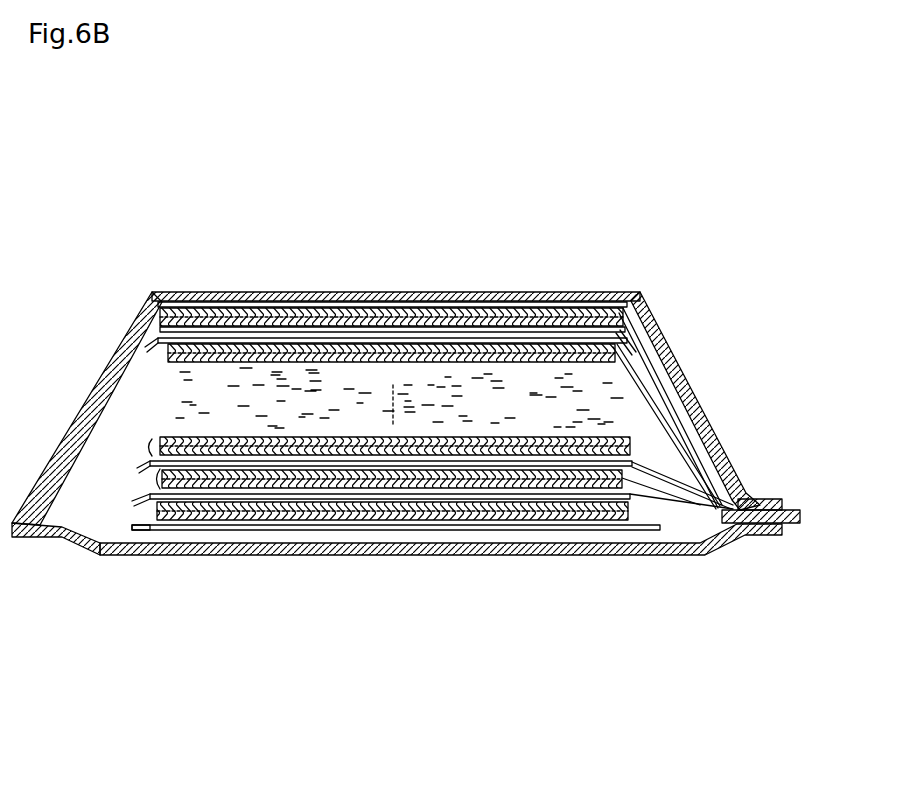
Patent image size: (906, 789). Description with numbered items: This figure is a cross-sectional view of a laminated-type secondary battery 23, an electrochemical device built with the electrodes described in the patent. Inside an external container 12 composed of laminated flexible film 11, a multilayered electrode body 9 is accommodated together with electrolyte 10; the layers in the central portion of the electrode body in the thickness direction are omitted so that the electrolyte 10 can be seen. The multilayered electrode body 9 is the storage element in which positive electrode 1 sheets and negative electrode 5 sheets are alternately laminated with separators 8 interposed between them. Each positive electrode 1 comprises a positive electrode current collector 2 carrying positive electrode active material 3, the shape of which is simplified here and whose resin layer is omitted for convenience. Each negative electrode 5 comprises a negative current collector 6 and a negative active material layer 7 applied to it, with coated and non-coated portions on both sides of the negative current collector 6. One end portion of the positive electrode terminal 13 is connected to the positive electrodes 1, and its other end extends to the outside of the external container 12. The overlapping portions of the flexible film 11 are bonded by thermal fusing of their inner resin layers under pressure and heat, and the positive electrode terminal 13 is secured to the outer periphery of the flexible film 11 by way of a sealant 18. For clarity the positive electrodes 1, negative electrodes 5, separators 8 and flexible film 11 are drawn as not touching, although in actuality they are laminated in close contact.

The positive electrode 1 is at (147, 480).
The positive electrode current collector 2 is at (712, 473).
The positive electrode active material 3 is at (538, 360).
The negative electrode 5 is at (147, 448).
The negative current collector 6 is at (682, 470).
The negative active material layer 7 is at (247, 310).
The separator 8 is at (140, 532).
The multilayered electrode body 9 is at (463, 533).
The electrolyte 10 is at (558, 384).
The flexible film 11 is at (441, 440).
The external container 12 is at (107, 347).
The positive electrode terminal 13 is at (790, 513).
The sealant 18 is at (767, 510).
The laminated-type secondary battery 23 is at (388, 253).